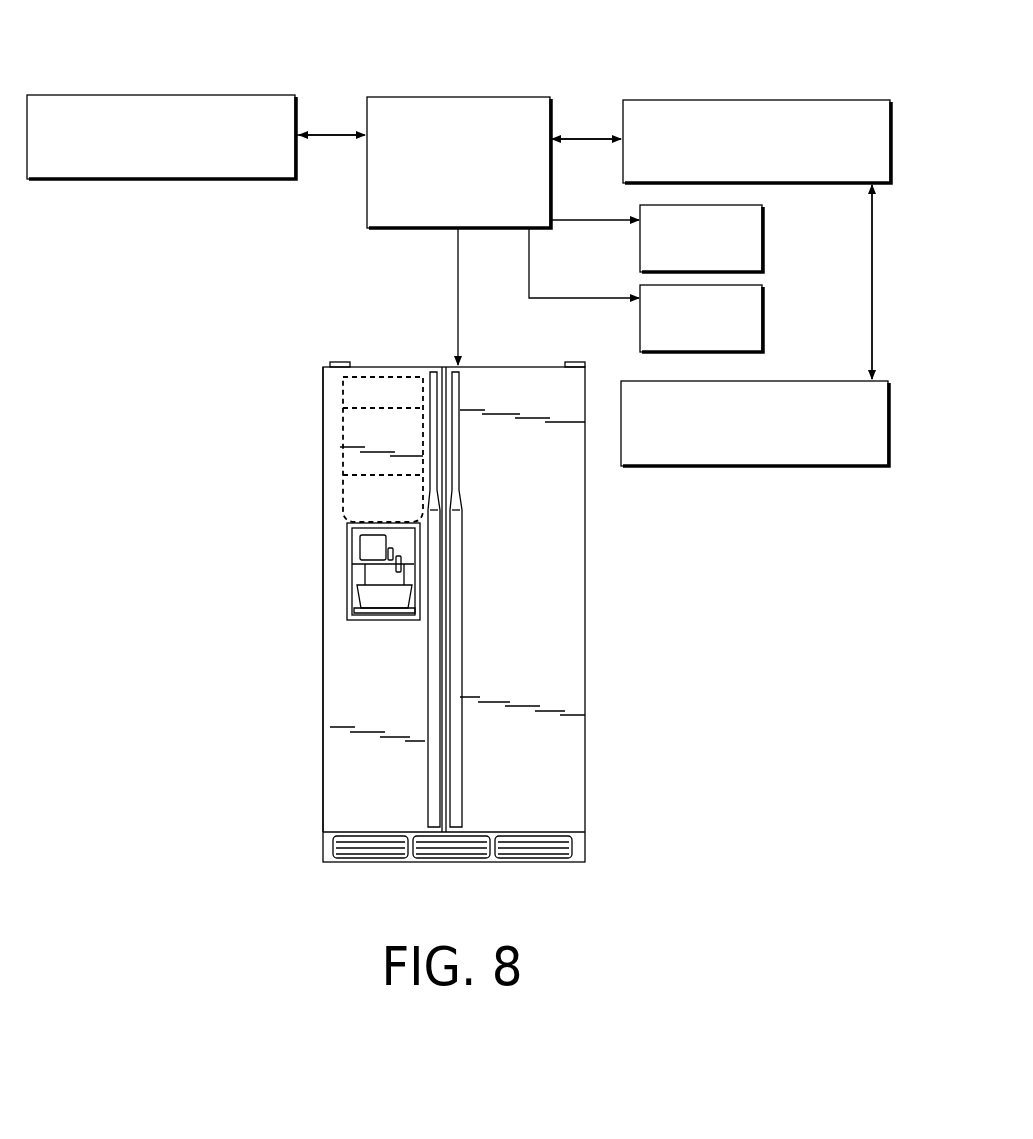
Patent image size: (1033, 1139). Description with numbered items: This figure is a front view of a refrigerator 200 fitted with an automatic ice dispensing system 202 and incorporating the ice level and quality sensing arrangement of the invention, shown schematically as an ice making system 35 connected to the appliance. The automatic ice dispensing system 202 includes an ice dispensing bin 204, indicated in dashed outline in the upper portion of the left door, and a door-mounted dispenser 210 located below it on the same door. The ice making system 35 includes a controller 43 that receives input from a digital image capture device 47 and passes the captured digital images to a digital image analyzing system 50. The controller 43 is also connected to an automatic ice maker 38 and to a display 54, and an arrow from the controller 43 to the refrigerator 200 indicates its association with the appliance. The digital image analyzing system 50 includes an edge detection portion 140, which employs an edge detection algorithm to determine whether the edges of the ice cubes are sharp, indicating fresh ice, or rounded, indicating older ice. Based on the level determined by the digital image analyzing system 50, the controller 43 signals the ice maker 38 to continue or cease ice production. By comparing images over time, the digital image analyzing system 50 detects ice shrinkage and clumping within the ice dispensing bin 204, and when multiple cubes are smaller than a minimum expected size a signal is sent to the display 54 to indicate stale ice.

The ice making system 35 is at (707, 531).
The automatic ice maker 38 is at (762, 258).
The controller 43 is at (365, 210).
The digital image capture device 47 is at (125, 180).
The digital image analyzing system 50 is at (665, 100).
The display 54 is at (762, 333).
The edge detection portion 140 is at (820, 466).
The refrigerator 200 is at (376, 561).
The automatic ice dispensing system 202 is at (318, 560).
The ice dispensing bin 204 is at (340, 420).
The door-mounted dispenser 210 is at (348, 577).